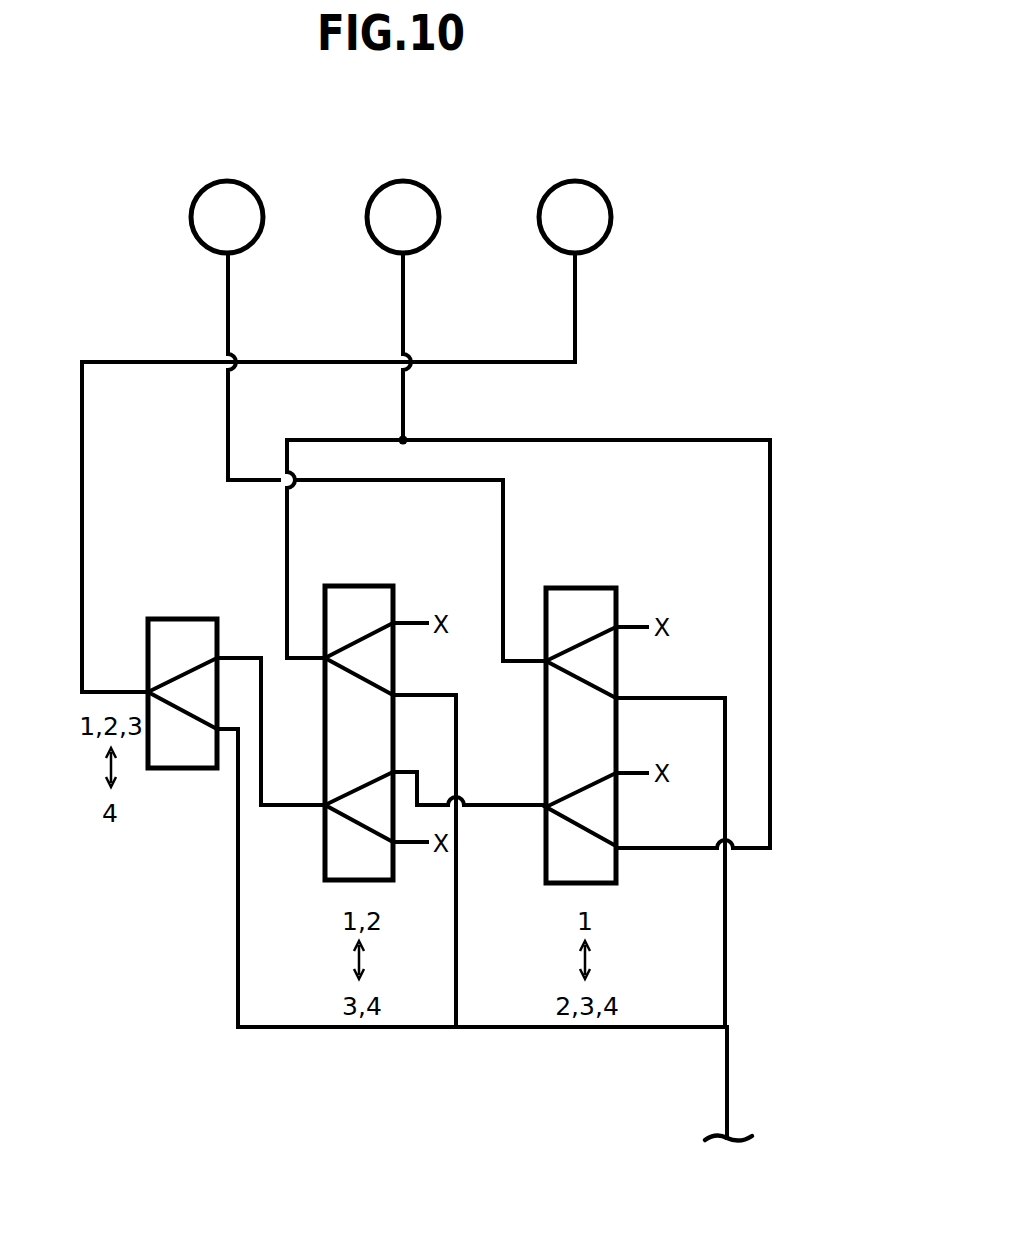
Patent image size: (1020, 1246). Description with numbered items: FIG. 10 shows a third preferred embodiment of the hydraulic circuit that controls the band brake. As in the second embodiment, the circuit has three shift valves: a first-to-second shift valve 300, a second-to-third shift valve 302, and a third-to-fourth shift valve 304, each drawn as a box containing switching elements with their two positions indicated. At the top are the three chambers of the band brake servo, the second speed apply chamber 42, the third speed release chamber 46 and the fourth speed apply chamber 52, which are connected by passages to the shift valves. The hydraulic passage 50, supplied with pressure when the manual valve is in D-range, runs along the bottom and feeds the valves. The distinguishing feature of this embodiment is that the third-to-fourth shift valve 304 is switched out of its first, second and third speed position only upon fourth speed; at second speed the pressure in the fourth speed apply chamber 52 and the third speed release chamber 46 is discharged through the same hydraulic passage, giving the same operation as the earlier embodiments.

The second speed apply chamber 42 is at (228, 180).
The third speed release chamber 46 is at (403, 180).
The fourth speed apply chamber 52 is at (575, 180).
The 1-2 shift valve 300 is at (587, 583).
The 2-3 shift valve 302 is at (365, 582).
The 3-4 shift valve 304 is at (191, 617).
The hydraulic passage 50 is at (729, 1069).